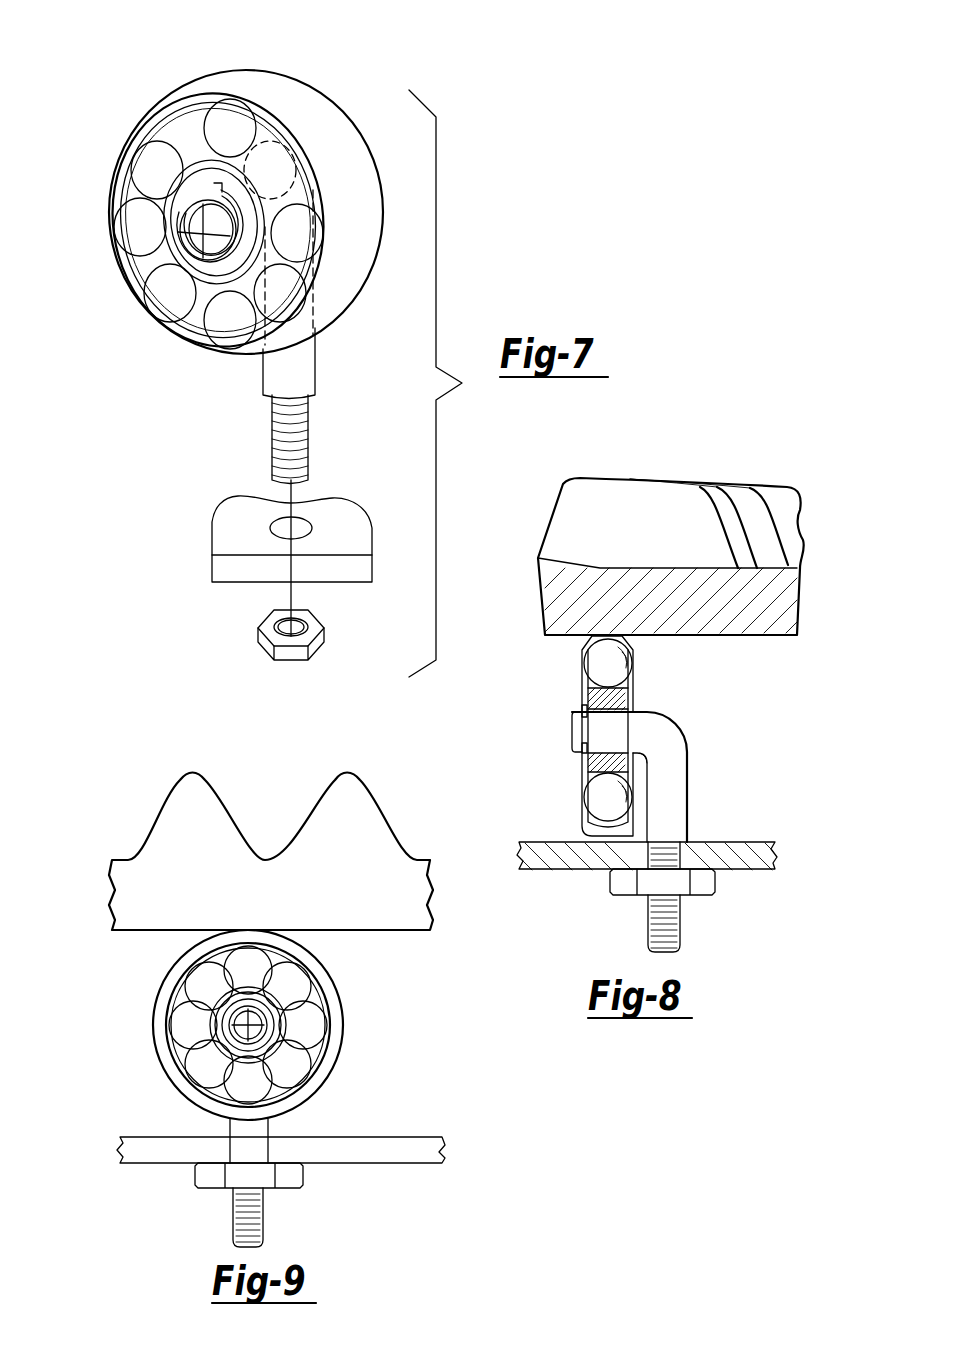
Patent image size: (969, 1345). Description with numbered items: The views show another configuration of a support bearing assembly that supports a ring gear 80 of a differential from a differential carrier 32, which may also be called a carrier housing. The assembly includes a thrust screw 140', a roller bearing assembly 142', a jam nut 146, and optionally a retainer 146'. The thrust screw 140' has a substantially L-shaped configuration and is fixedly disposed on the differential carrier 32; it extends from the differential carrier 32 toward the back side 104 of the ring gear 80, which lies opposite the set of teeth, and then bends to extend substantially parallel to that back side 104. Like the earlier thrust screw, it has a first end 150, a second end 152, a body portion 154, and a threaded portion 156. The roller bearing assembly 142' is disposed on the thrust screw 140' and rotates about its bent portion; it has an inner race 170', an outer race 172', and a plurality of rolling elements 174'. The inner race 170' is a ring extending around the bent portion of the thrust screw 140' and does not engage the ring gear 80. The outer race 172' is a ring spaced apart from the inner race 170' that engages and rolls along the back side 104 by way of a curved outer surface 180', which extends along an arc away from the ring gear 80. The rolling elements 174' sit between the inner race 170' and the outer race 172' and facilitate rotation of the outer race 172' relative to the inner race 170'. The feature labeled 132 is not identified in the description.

In FIG. 7, the differential carrier 32 is at (256, 537).
In FIG. 8, the differential carrier 32 is at (538, 850).
In FIG. 9, the differential carrier 32 is at (156, 1137).
In FIG. 8, the ring gear 80 is at (547, 585).
In FIG. 9, the ring gear 80 is at (112, 903).
In FIG. 8, the back side 104 is at (658, 638).
In FIG. 7, the plate mounting hole 132 is at (295, 586).
In FIG. 7, the thrust screw 140' is at (238, 305).
In FIG. 8, the thrust screw 140' is at (662, 777).
In FIG. 9, the thrust screw 140' is at (308, 1127).
In FIG. 7, the roller bearing assembly 142' is at (249, 220).
In FIG. 9, the roller bearing assembly 142' is at (312, 1025).
In FIG. 7, the jam nut 146 is at (313, 637).
In FIG. 8, the jam nut 146 is at (690, 910).
In FIG. 9, the jam nut 146 is at (287, 1205).
In FIG. 7, the retainer 146' is at (162, 180).
In FIG. 8, the retainer 146' is at (527, 716).
In FIG. 9, the retainer 146' is at (265, 967).
In FIG. 7, the first end 150 is at (190, 234).
In FIG. 7, the second end 152 is at (300, 490).
In FIG. 7, the body portion 154 is at (316, 355).
In FIG. 7, the threaded portion 156 is at (298, 430).
In FIG. 7, the inner race 170' is at (217, 238).
In FIG. 8, the inner race 170' is at (663, 736).
In FIG. 9, the inner race 170' is at (320, 1025).
In FIG. 7, the outer race 172' is at (246, 196).
In FIG. 9, the outer race 172' is at (213, 1025).
In FIG. 7, the rolling elements 174' is at (242, 185).
In FIG. 8, the rolling elements 174' is at (548, 729).
In FIG. 9, the rolling elements 174' is at (256, 1025).
In FIG. 8, the curved outer surface 180' is at (613, 879).